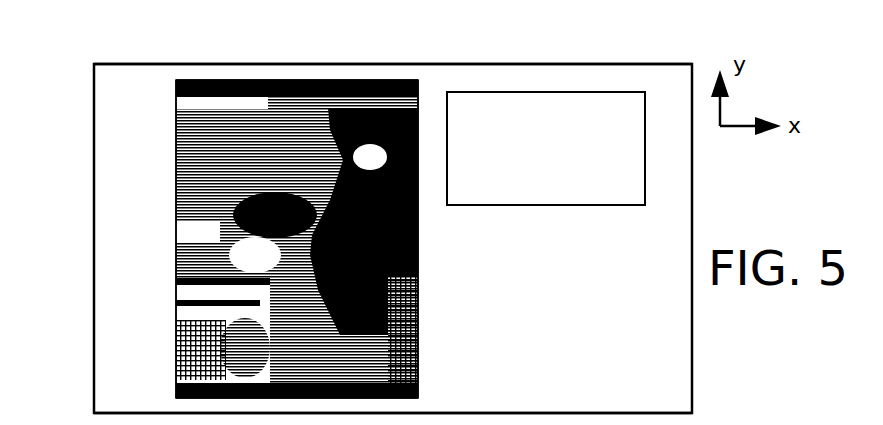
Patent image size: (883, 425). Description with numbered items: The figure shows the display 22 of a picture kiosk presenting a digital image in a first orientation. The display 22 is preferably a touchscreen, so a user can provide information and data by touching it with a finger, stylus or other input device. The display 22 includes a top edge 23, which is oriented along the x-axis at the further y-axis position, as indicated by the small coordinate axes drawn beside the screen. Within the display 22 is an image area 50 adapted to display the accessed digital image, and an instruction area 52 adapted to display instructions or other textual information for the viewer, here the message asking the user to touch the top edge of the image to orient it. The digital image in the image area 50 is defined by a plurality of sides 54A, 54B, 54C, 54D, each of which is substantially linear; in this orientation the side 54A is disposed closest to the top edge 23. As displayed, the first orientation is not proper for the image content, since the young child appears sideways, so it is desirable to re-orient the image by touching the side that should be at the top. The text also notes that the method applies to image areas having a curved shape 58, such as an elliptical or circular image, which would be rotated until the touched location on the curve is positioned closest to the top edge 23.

The display 22 is at (95, 182).
The top edge 23 is at (115, 64).
The image area 50 is at (188, 203).
The instruction area 52 is at (587, 207).
The side 54A is at (355, 80).
The side 54B is at (418, 283).
The side 54C is at (398, 396).
The side 54D is at (177, 313).
The curved shape 58 is at (220, 237).